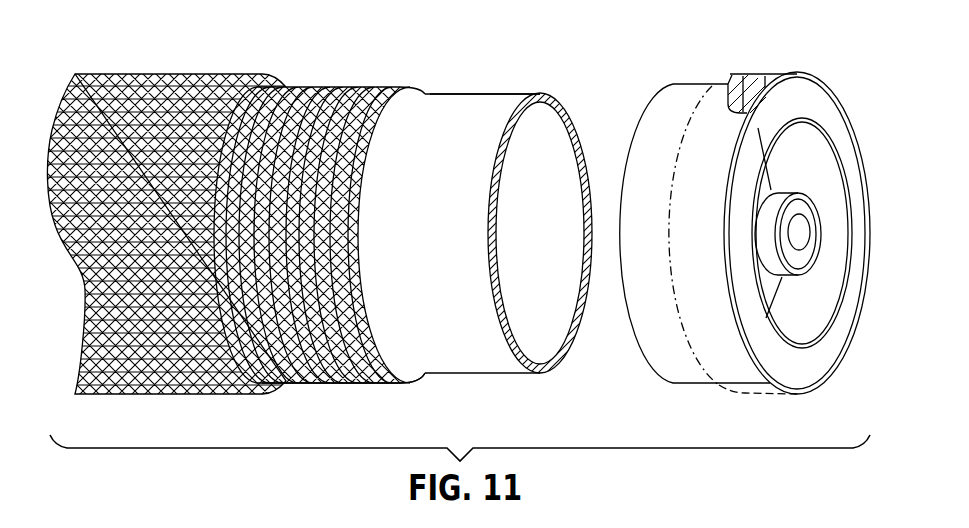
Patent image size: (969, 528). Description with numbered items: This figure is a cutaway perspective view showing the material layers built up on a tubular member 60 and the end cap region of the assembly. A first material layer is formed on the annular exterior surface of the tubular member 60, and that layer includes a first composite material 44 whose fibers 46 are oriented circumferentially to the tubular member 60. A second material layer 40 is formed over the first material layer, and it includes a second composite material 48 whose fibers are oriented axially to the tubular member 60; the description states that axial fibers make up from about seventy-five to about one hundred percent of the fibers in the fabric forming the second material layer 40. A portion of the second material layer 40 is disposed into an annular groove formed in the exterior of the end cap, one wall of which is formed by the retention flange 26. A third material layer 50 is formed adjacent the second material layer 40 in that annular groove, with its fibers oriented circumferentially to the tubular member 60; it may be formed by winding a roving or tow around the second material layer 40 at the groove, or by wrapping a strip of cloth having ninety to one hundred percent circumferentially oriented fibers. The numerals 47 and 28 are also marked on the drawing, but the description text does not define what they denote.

The second material layer 40 is at (152, 103).
The ridge of collar 47 is at (268, 135).
The fibers 46 is at (343, 113).
The second composite material 48 is at (313, 360).
The first composite material 44 is at (463, 123).
The tubular member 60 is at (500, 85).
The flange ring 28 is at (690, 83).
The third material layer 50 is at (747, 88).
The retention flange 26 is at (813, 98).